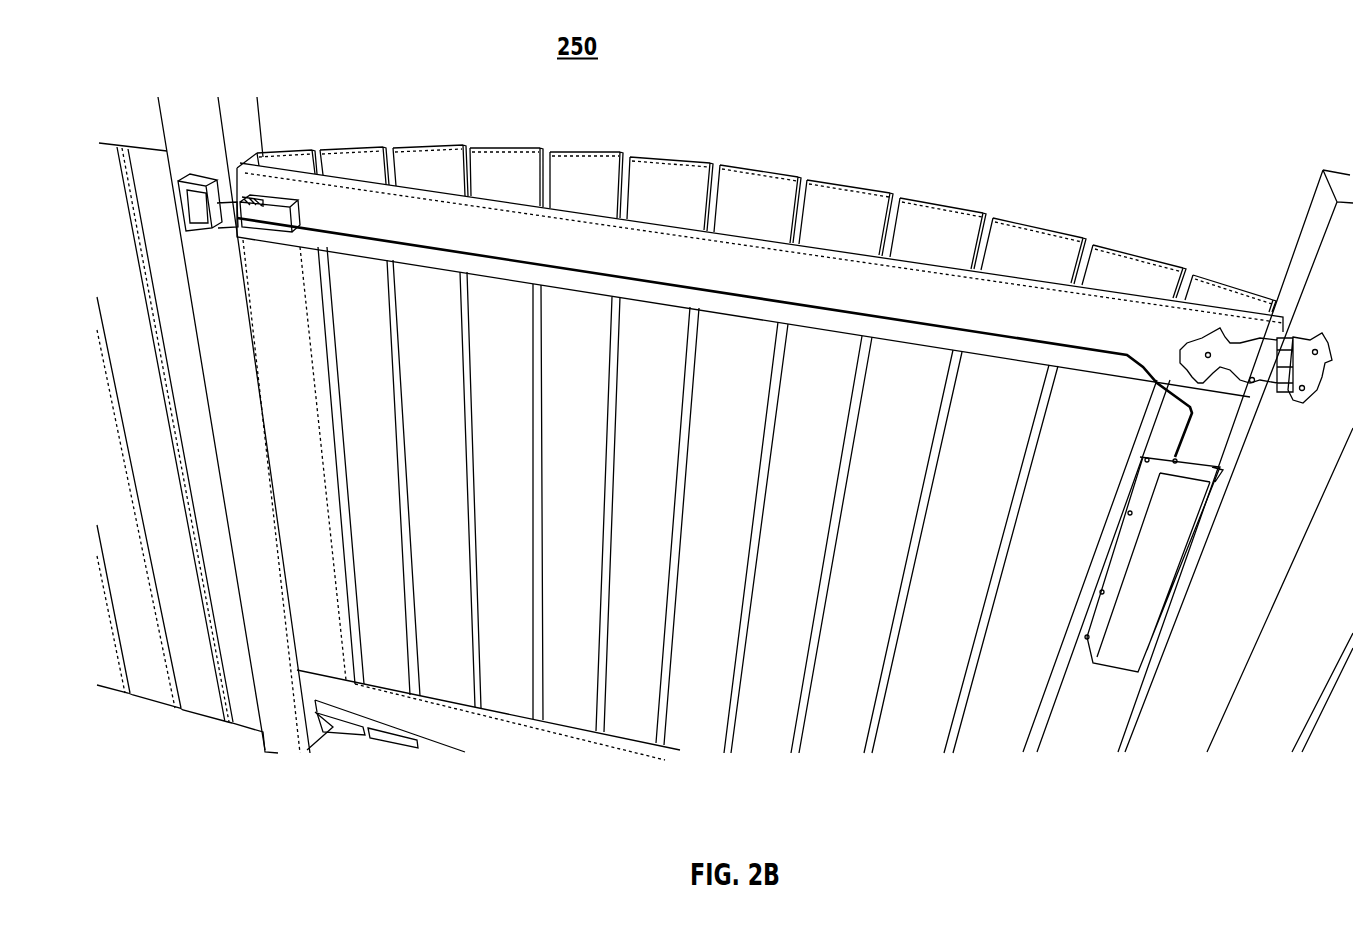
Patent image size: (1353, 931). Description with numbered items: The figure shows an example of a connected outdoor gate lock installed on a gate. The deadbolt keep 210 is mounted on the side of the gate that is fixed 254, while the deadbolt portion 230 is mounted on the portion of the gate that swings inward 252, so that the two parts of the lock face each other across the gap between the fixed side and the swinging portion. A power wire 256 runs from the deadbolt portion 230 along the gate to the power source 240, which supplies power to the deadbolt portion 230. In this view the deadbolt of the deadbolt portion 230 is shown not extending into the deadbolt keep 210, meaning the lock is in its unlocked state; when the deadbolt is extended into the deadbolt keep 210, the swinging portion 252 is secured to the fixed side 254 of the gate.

The deadbolt keep 210 is at (183, 177).
The deadbolt portion 230 is at (290, 208).
The power source 240 is at (1183, 548).
The portion of the gate that swings inward 252 is at (765, 172).
The side of a gate that is fixed 254 is at (263, 117).
The power wire 256 is at (837, 308).